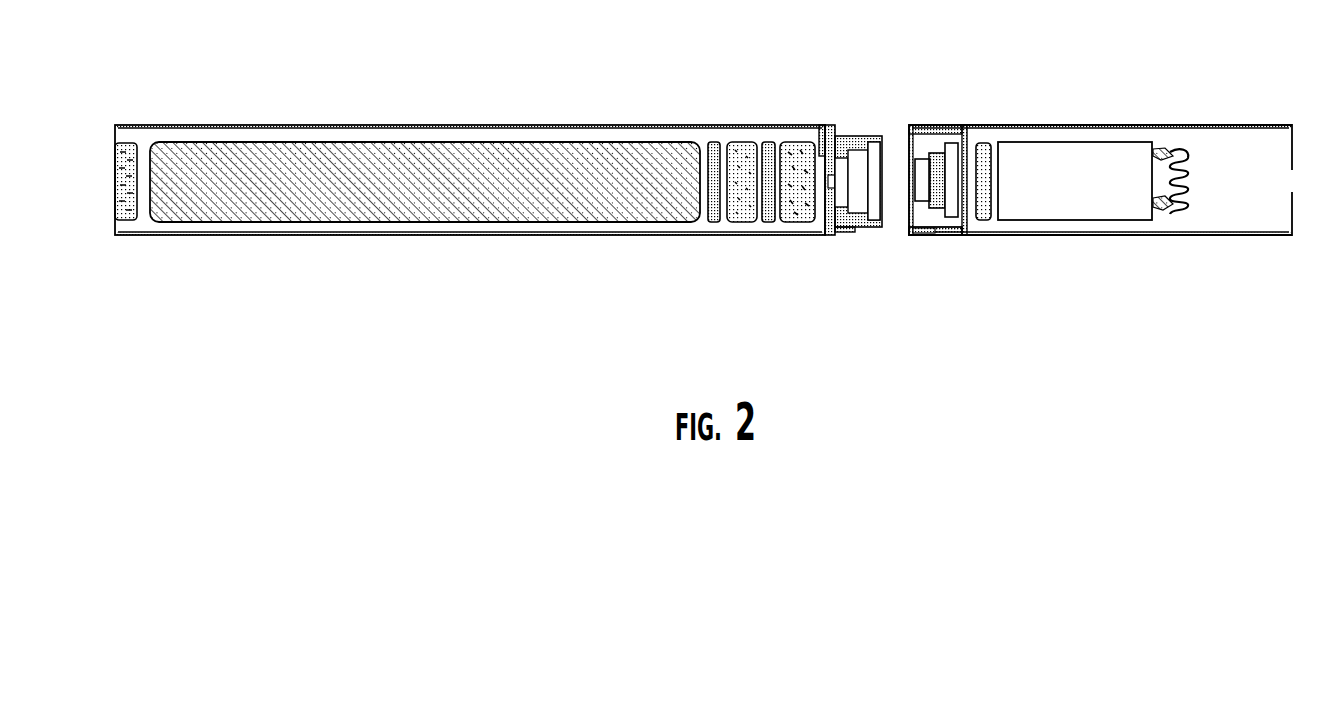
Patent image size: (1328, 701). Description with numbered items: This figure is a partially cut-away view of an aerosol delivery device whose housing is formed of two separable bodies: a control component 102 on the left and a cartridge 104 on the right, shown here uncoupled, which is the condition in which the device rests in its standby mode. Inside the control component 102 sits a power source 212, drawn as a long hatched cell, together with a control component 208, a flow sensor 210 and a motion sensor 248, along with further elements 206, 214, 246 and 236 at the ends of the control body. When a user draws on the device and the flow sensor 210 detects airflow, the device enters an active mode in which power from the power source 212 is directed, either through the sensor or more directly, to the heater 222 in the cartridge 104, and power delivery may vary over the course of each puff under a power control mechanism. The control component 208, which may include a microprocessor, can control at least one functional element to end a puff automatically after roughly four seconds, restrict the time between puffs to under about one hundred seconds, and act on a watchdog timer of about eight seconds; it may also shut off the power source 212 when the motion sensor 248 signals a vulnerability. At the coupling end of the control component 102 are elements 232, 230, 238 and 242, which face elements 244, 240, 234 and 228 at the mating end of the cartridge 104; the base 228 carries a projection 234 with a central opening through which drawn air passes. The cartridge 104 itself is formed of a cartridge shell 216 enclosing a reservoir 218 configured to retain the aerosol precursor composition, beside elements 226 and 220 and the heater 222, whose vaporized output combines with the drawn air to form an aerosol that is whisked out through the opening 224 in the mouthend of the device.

The control component 102 is at (187, 88).
The cartridge 104 is at (1113, 92).
The battery section housing 206 is at (470, 206).
The control component 208 is at (723, 215).
The flow sensor 210 is at (780, 215).
The power source 212 is at (425, 215).
The end cap / indicator light 214 is at (147, 215).
The cartridge shell 216 is at (1100, 220).
The reservoir 218 is at (1075, 208).
The wick 220 is at (1191, 217).
The heater 222 is at (1229, 211).
The opening 224 is at (1290, 173).
The cartridge seal 226 is at (1005, 208).
The base 228 is at (989, 214).
The battery section connector 230 is at (877, 211).
The connector end wall 232 is at (858, 150).
The projection 234 is at (953, 143).
The air inlet 236 is at (823, 125).
The connector contact 238 is at (888, 152).
The cartridge connector insulator 240 is at (912, 127).
The connector lead 242 is at (867, 273).
The cartridge end wall 244 is at (949, 280).
The battery contact plate 246 is at (714, 142).
The motion sensor 248 is at (768, 142).